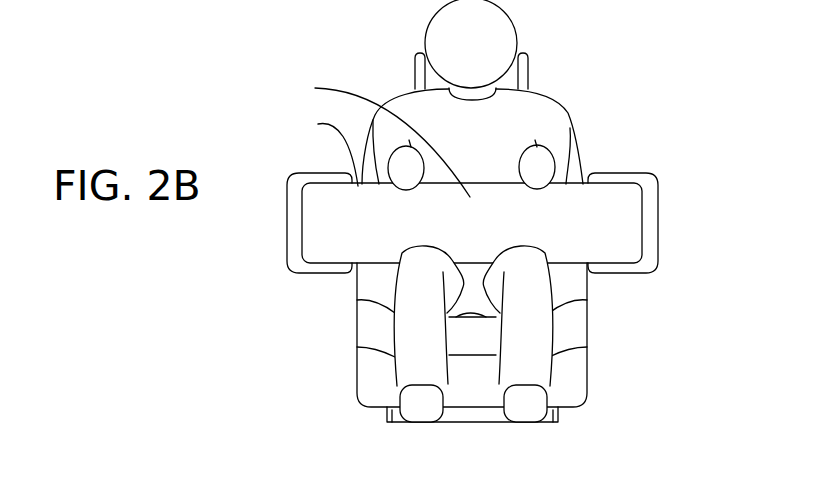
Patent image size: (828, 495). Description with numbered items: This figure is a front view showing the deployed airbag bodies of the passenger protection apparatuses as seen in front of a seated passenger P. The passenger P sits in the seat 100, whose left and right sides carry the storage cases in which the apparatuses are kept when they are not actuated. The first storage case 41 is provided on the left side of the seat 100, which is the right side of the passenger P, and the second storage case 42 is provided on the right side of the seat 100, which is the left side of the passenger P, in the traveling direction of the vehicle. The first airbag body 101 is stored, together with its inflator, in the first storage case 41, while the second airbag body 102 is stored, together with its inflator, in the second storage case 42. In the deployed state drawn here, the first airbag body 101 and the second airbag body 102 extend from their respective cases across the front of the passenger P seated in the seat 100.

The passenger P is at (507, 27).
The first storage case 41 is at (658, 250).
The second storage case 42 is at (287, 254).
The seat 100 is at (286, 80).
The first airbag body 101 is at (379, 140).
The second airbag body 102 is at (324, 151).